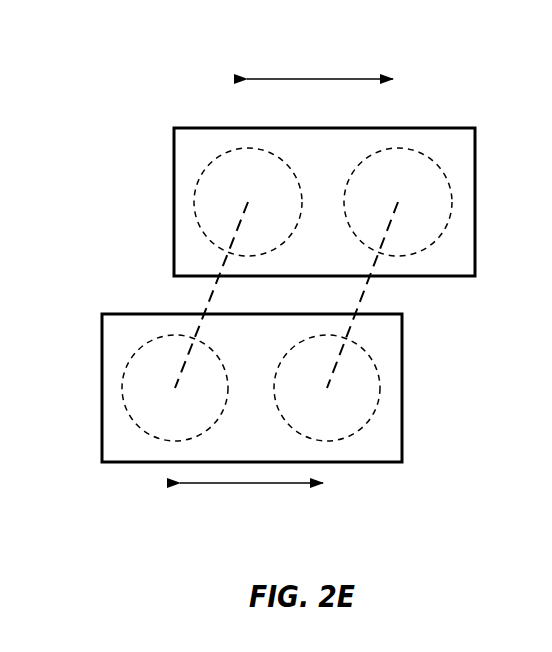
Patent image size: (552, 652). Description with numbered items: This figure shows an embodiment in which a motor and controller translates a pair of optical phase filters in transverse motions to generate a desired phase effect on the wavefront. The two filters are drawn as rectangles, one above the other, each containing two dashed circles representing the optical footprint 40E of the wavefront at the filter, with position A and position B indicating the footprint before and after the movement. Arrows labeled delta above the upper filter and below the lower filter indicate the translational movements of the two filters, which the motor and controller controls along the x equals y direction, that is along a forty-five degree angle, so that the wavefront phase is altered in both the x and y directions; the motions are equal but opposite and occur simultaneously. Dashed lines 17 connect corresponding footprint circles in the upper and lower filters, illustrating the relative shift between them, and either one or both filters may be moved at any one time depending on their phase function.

The dashed displacement lines between bond positions 17 is at (217, 283).
The optical footprint 40E is at (140, 428).